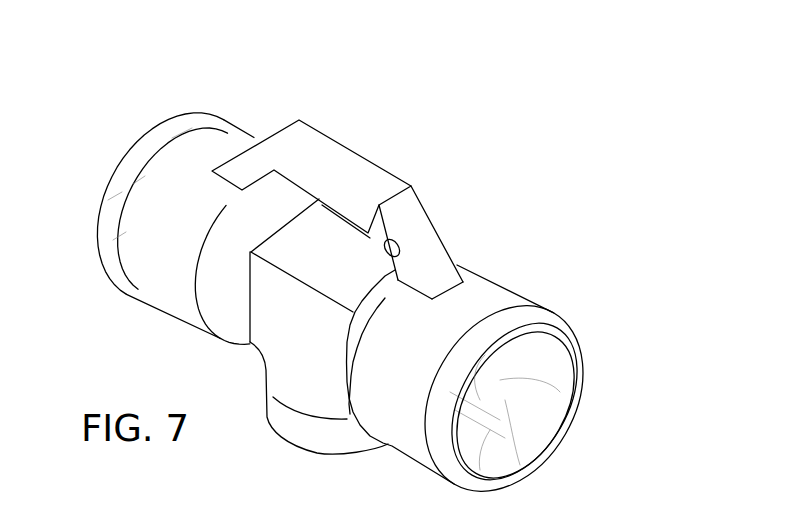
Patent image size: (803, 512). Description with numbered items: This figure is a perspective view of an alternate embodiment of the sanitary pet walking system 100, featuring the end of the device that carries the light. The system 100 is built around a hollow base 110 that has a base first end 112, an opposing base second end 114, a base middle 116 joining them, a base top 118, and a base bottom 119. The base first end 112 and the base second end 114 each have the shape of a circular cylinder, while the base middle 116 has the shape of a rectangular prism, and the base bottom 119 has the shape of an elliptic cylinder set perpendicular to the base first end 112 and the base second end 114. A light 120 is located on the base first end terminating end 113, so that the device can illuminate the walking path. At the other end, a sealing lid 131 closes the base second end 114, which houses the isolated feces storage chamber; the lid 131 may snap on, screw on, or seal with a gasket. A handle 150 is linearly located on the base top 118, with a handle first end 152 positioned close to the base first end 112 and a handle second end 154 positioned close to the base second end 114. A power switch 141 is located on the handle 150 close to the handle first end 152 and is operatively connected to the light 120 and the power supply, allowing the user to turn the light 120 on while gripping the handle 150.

The sanitary pet walking system 100 is at (350, 92).
The hollow base 110 is at (158, 251).
The base first end 112 is at (517, 297).
The base first end terminating end 113 is at (555, 370).
The base second end 114 is at (160, 180).
The base middle 116 is at (287, 305).
The base top 118 is at (327, 248).
The base bottom 119 is at (328, 455).
The light 120 is at (478, 385).
The sealing lid 131 is at (175, 134).
The power switch 141 is at (398, 246).
The handle 150 is at (432, 192).
The handle first end 152 is at (438, 267).
The handle second end 154 is at (241, 172).